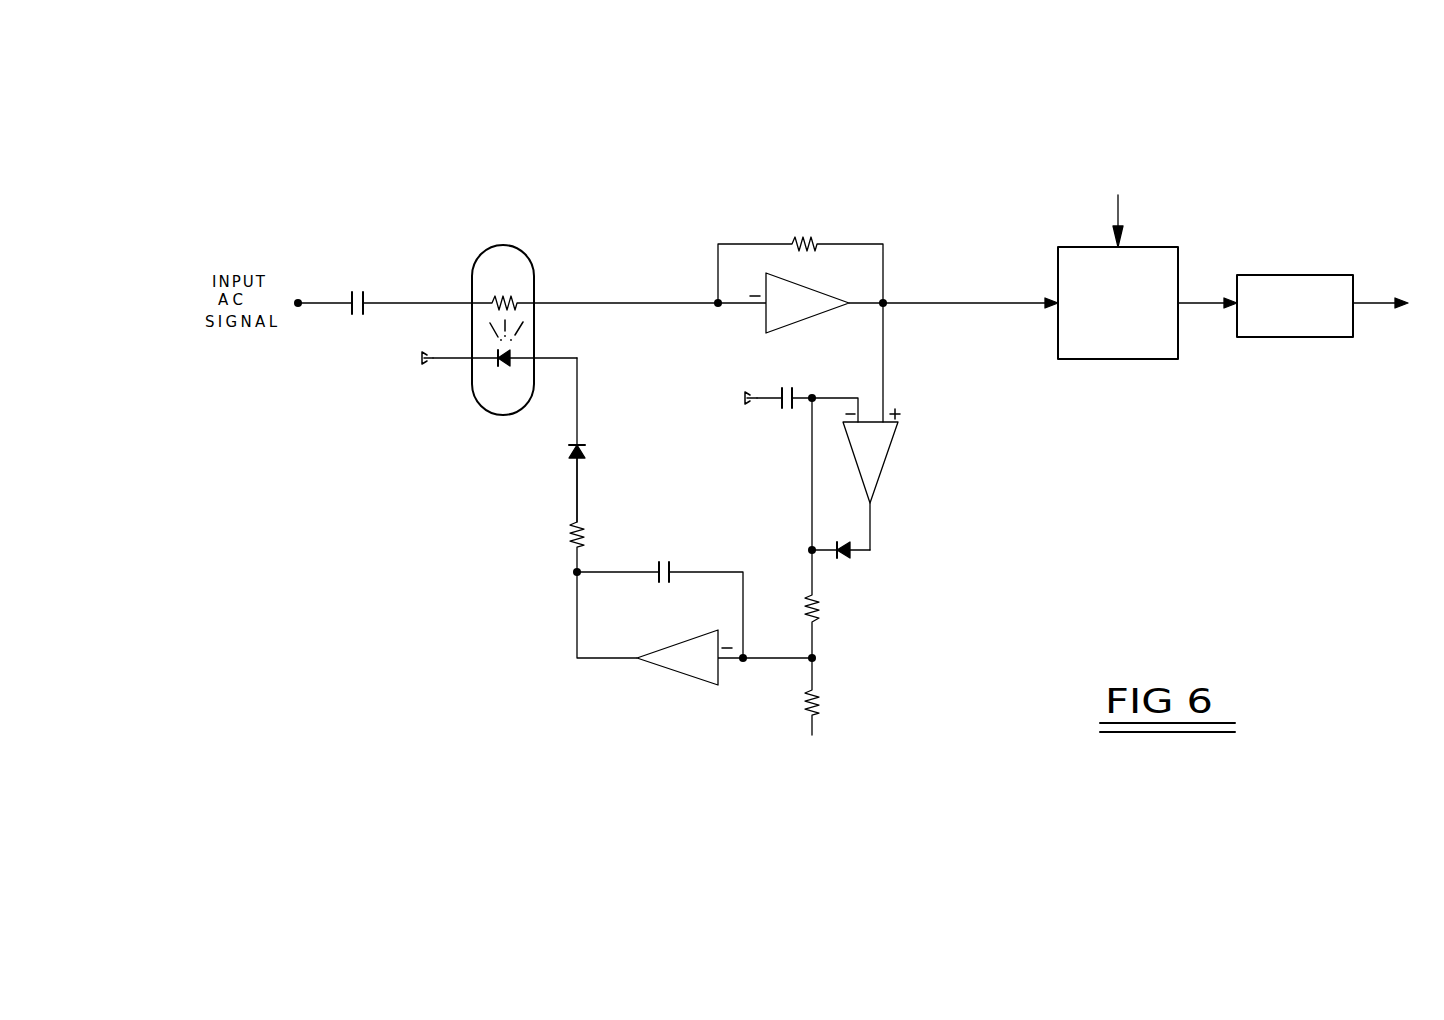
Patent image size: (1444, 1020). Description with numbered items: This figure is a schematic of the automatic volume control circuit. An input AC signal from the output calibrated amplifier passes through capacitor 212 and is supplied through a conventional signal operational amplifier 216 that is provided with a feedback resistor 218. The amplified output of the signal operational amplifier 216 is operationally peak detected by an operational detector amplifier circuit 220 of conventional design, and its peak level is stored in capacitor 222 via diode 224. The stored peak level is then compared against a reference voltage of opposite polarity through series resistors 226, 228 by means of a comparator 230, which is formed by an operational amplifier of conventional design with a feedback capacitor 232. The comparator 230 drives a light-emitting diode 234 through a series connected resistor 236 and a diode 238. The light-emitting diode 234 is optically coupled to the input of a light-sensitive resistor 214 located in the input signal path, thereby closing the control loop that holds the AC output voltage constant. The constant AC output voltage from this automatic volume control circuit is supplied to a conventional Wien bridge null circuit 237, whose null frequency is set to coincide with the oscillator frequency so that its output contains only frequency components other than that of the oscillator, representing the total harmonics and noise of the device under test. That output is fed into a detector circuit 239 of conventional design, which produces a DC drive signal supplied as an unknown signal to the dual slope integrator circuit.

The capacitor 212 is at (345, 290).
The light-sensitive resistor 214 is at (512, 286).
The signal operational amplifier 216 is at (838, 297).
The feedback resistor 218 is at (812, 240).
The operational detector amplifier circuit 220 is at (890, 452).
The capacitor 222 is at (798, 386).
The diode 224 is at (848, 555).
The series resistor 226 is at (818, 620).
The series resistor 228 is at (818, 688).
The comparator 230 is at (672, 640).
The feedback capacitor 232 is at (660, 565).
The light-emitting diode 234 is at (495, 363).
The resistor 236 is at (572, 522).
The Wien bridge null circuit 237 is at (1100, 362).
The diode 238 is at (580, 456).
The detector circuit 239 is at (1280, 338).